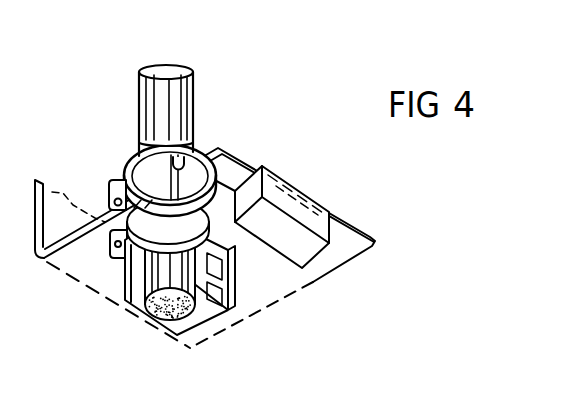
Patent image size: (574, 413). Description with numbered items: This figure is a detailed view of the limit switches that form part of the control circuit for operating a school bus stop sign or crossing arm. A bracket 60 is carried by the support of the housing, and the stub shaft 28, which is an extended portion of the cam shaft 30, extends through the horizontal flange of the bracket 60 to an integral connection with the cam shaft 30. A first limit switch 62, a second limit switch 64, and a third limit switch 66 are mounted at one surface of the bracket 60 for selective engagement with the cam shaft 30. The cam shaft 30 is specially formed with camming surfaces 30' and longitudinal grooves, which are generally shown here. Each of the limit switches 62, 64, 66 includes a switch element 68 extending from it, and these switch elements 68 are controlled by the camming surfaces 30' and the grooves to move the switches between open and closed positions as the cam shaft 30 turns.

The stub shaft 28 is at (188, 318).
The cam shaft 30 is at (176, 87).
The camming surfaces 30' is at (148, 182).
The bracket 60 is at (338, 254).
The first limit switch 62 is at (120, 268).
The second limit switch 64 is at (123, 291).
The third limit switch 66 is at (308, 218).
The switch element 68 is at (213, 206).